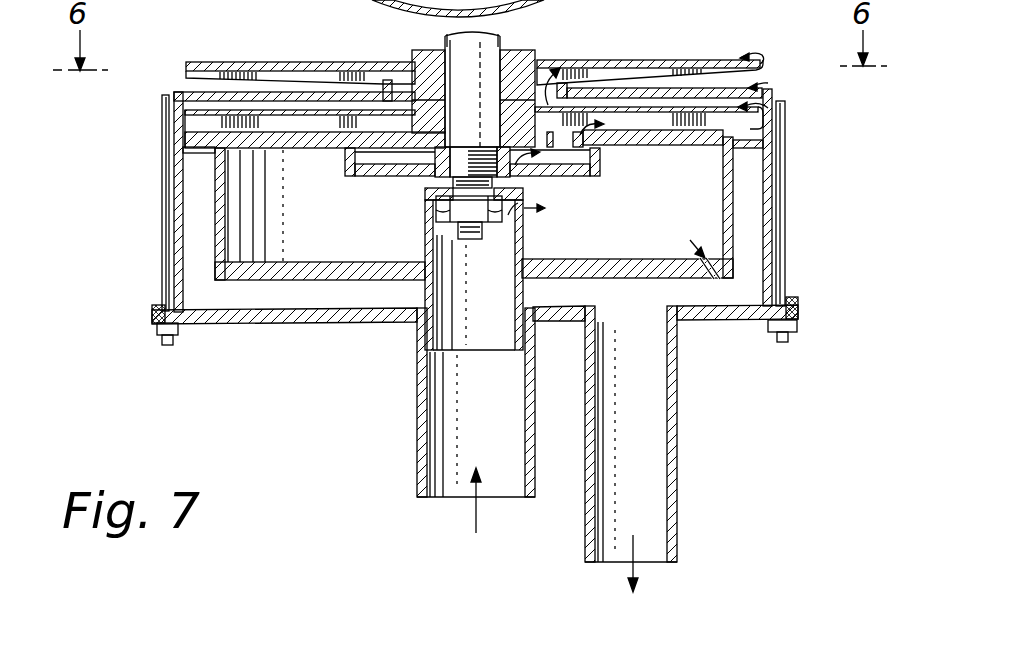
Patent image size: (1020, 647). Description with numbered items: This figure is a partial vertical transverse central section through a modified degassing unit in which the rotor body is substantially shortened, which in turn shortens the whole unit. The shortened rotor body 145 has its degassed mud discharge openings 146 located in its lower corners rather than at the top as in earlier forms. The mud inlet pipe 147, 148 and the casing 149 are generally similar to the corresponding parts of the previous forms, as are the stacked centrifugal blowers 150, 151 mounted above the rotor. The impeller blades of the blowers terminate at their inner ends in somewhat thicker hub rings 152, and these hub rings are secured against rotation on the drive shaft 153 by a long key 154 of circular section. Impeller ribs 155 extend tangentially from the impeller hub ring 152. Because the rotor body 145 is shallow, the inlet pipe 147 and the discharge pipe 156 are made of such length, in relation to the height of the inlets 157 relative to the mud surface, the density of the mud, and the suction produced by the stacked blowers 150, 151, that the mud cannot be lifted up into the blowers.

The shortened rotor body 145 is at (735, 183).
The degassed mud discharge openings 146 is at (724, 279).
The mud inlet pipe 147 is at (421, 383).
The mud inlet pipe 148 is at (426, 287).
The casing 149 is at (772, 207).
The centrifugal blower 150 is at (770, 82).
The centrifugal blower 151 is at (707, 56).
The hub ring 152 is at (538, 62).
The drive shaft 153 is at (502, 38).
The circular section key 154 is at (444, 38).
The impeller rib 155 is at (615, 70).
The discharge pipe 156 is at (680, 472).
The inlet 157 is at (520, 172).